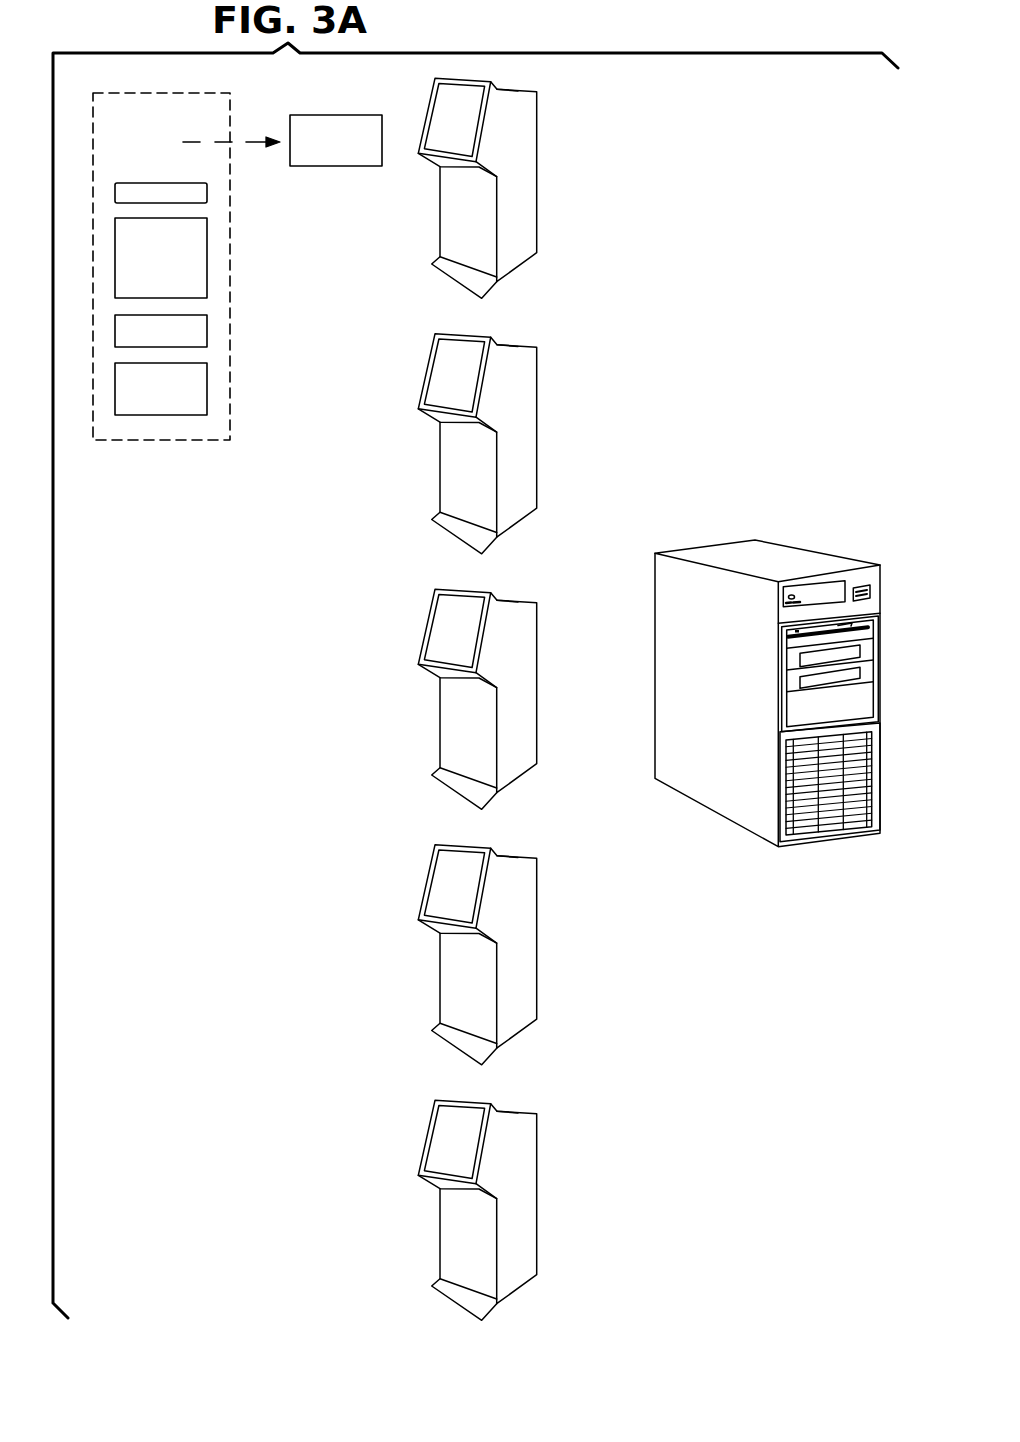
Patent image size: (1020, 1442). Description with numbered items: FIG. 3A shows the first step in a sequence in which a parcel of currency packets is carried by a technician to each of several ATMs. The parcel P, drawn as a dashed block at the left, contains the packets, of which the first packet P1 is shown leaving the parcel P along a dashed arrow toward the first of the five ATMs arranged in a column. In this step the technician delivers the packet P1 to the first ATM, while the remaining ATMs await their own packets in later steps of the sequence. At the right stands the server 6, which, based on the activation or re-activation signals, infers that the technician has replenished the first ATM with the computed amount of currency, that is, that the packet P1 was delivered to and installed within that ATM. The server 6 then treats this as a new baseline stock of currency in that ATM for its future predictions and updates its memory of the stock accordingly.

The parcel P is at (148, 266).
The packet P1 is at (336, 127).
The server 6 is at (790, 557).